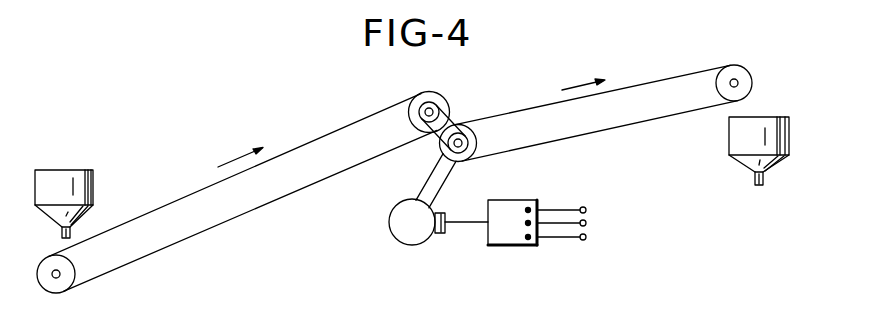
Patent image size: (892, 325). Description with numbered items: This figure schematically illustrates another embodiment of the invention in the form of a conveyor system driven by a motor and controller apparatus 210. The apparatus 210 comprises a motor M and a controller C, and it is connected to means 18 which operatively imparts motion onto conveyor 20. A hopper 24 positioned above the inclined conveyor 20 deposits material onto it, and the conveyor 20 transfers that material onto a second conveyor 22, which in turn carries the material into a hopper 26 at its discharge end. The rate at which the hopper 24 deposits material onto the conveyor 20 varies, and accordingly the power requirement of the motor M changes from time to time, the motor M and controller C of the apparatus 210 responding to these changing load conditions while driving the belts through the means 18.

The means 18 is at (475, 140).
The conveyor 20 is at (163, 250).
The conveyor 22 is at (612, 132).
The hopper 24 is at (50, 170).
The hopper 26 is at (789, 137).
The motor and controller apparatus 210 is at (395, 225).
The motor M is at (389, 222).
The controller C is at (505, 240).